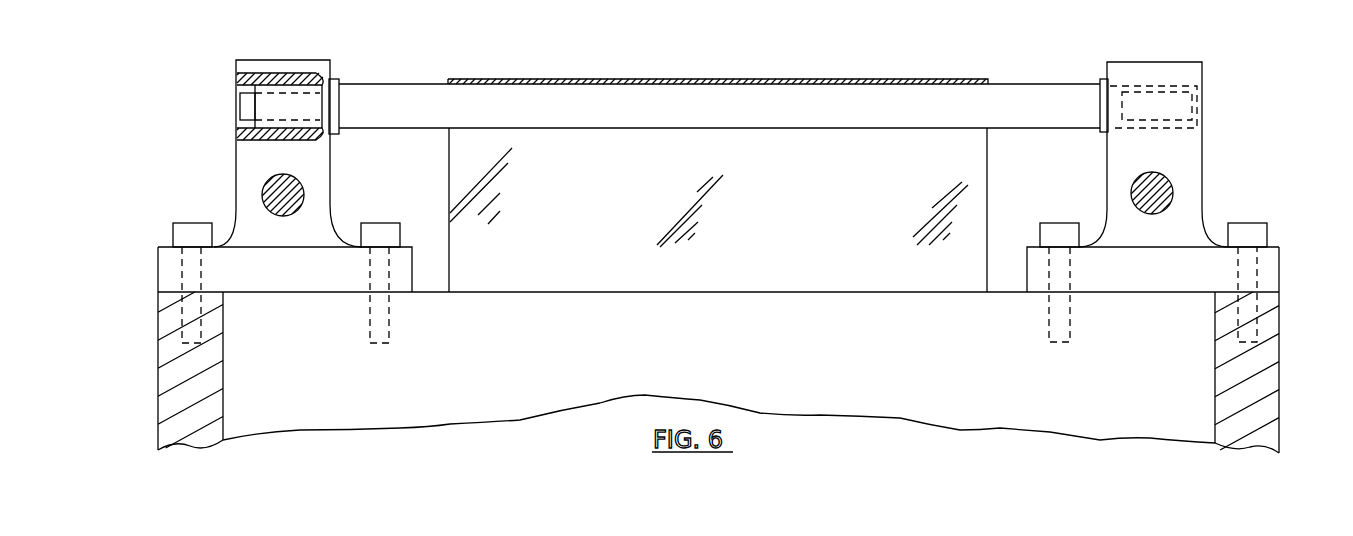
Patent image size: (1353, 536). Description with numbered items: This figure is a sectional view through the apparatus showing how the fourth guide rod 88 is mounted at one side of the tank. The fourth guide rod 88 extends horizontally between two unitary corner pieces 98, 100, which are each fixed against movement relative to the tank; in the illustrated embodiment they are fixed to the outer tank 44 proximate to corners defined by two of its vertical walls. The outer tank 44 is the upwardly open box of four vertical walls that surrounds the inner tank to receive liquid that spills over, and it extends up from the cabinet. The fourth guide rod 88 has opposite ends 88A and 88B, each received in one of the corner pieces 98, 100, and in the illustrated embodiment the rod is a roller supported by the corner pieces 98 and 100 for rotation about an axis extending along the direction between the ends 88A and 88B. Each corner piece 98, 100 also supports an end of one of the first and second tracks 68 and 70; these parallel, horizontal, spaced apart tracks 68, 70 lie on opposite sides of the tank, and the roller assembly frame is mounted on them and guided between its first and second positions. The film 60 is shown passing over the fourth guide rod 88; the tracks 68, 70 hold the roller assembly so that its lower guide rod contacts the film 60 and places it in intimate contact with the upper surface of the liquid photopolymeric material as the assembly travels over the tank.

The outer tank 44 is at (1279, 342).
The film 60 is at (882, 79).
The first track 68 is at (265, 192).
The second track 70 is at (1171, 187).
The fourth guide rod 88 is at (1040, 93).
The end of fourth guide rod 88A is at (247, 110).
The end of fourth guide rod 88B is at (1192, 100).
The corner piece 98 is at (236, 148).
The corner piece 100 is at (1203, 140).